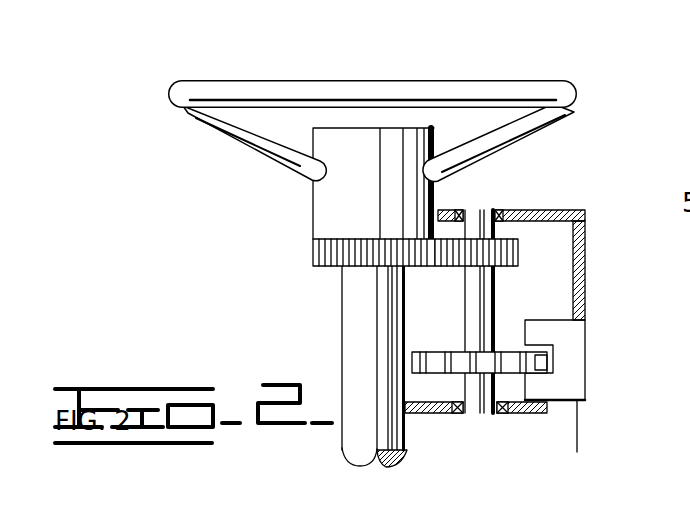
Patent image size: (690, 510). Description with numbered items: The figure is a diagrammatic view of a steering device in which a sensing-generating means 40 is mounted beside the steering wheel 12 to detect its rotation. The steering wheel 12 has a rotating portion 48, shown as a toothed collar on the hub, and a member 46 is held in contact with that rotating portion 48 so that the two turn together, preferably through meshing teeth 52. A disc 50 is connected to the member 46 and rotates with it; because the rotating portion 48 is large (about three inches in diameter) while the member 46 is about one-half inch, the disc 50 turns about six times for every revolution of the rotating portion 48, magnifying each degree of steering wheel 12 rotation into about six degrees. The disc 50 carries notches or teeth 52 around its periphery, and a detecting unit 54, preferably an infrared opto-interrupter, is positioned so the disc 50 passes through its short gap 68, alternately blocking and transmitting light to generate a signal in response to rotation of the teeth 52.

The steering wheel 12 is at (550, 80).
The sensing-generating means 40 is at (612, 295).
The member 46 is at (518, 252).
The rotating portion 48 is at (312, 247).
The disc 50 is at (445, 352).
The teeth 52 is at (450, 402).
The detecting unit 54 is at (585, 393).
The gap 68 is at (541, 371).